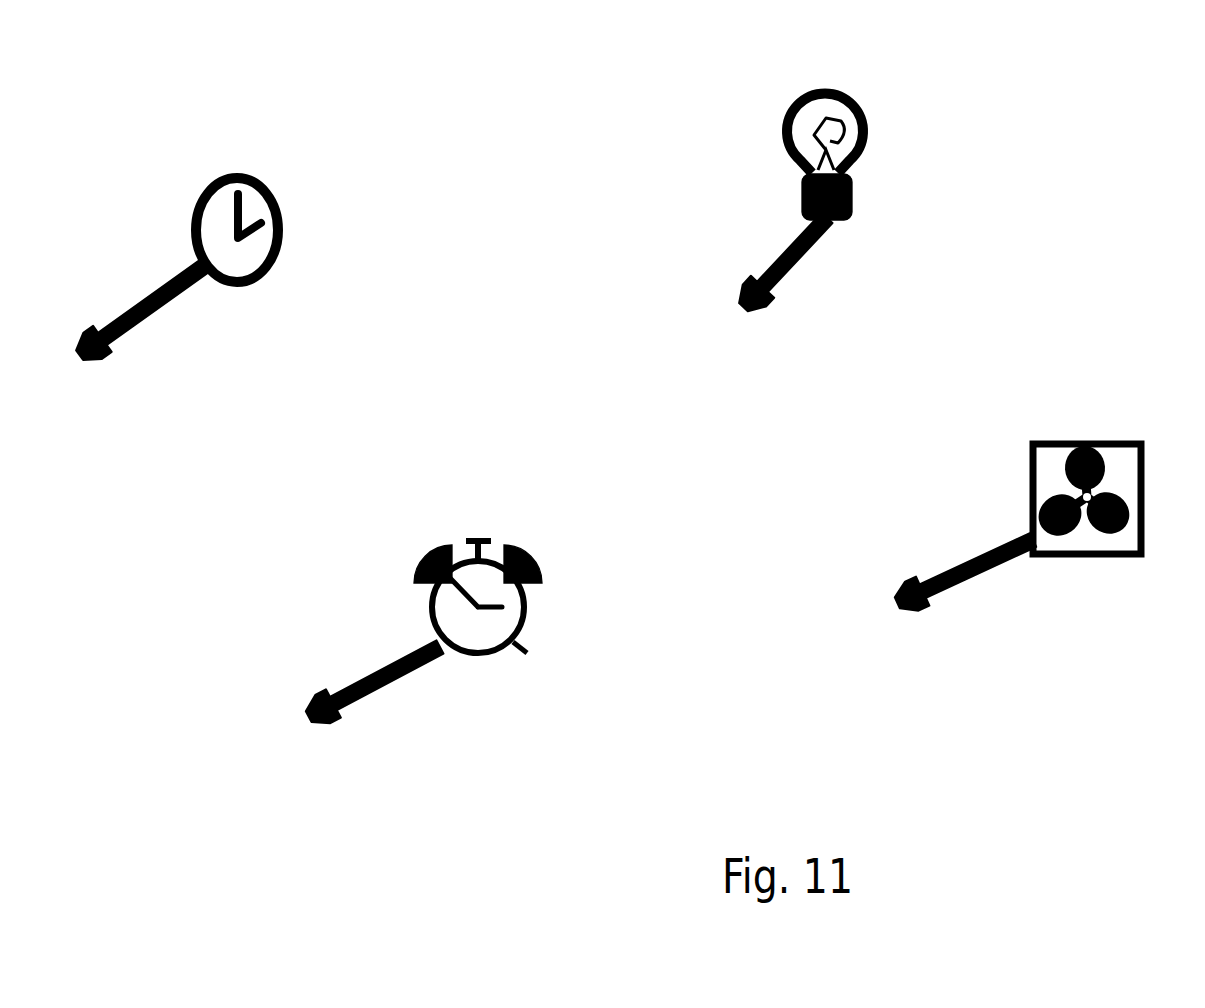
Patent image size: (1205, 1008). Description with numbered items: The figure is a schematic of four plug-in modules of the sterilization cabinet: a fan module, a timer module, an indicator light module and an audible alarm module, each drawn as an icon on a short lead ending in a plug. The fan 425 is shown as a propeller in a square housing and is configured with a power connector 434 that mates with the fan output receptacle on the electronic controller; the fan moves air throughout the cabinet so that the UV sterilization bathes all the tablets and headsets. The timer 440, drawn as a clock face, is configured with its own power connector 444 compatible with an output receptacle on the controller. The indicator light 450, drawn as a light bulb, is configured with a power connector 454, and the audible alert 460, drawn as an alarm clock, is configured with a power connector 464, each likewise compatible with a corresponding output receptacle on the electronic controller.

The timer 440 is at (268, 170).
The power connector 444 is at (118, 363).
The indicator light 450 is at (872, 115).
The power connector 454 is at (724, 278).
The fan 425 is at (1135, 445).
The power connector 434 is at (901, 557).
The audible alert 460 is at (396, 598).
The power connector 464 is at (284, 702).